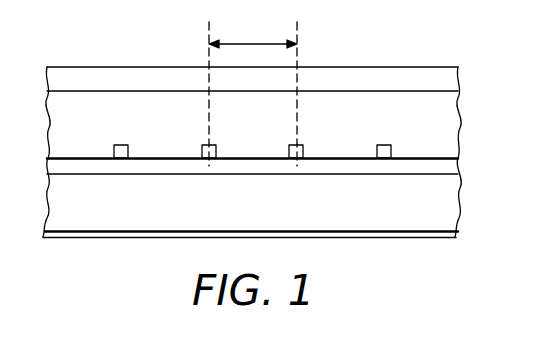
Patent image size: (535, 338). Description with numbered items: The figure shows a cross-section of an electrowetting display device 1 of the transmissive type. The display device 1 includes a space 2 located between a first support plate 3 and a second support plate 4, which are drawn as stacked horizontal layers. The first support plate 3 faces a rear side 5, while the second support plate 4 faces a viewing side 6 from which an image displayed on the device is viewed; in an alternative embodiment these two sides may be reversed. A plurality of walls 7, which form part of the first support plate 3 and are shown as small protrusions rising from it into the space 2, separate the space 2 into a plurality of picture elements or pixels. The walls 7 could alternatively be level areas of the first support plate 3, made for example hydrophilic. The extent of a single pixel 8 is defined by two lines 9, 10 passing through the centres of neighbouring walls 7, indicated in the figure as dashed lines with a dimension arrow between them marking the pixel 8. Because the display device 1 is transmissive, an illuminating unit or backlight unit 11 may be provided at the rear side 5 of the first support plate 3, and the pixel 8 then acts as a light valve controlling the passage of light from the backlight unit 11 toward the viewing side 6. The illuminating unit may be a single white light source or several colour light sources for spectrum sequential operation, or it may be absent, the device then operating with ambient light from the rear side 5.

The electrowetting display device 1 is at (451, 40).
The space 2 is at (451, 121).
The first support plate 3 is at (451, 163).
The second support plate 4 is at (451, 78).
The rear side 5 is at (250, 229).
The viewing side 6 is at (252, 87).
The walls 7 is at (119, 145).
The pixel 8 is at (253, 32).
The line 9 is at (209, 27).
The line 10 is at (297, 27).
The backlight unit 11 is at (465, 176).